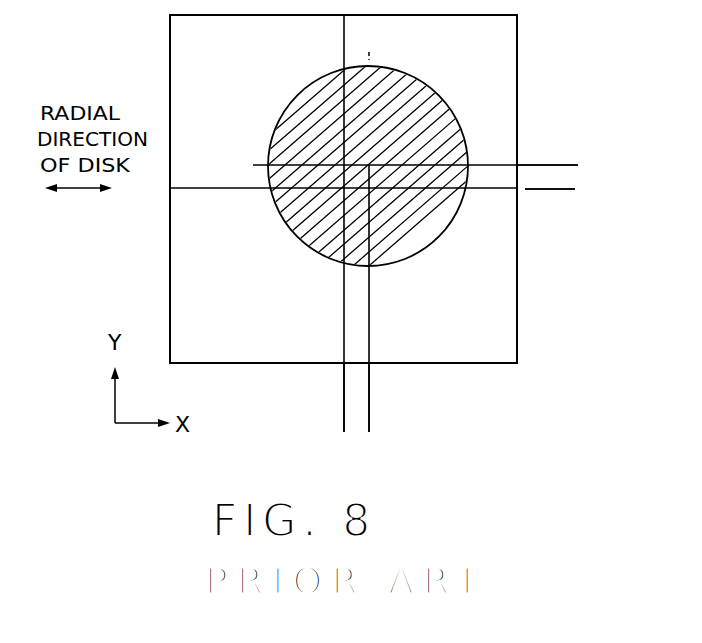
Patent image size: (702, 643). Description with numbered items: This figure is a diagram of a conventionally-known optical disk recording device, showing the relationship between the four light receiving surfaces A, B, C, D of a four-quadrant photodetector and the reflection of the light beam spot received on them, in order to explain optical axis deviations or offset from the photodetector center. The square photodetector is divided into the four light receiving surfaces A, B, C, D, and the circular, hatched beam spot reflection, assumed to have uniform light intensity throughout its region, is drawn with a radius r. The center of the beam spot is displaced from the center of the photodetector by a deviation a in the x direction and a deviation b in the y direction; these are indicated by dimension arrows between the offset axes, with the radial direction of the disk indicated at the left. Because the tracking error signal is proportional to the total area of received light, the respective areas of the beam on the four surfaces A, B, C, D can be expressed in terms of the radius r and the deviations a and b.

The light receiving surface A is at (257, 101).
The light receiving surface B is at (430, 101).
The light receiving surface C is at (430, 275).
The light receiving surface D is at (257, 275).
The radius of the received light beam spot r is at (468, 165).
The deviation in x direction a is at (410, 422).
The deviation in y direction b is at (564, 125).